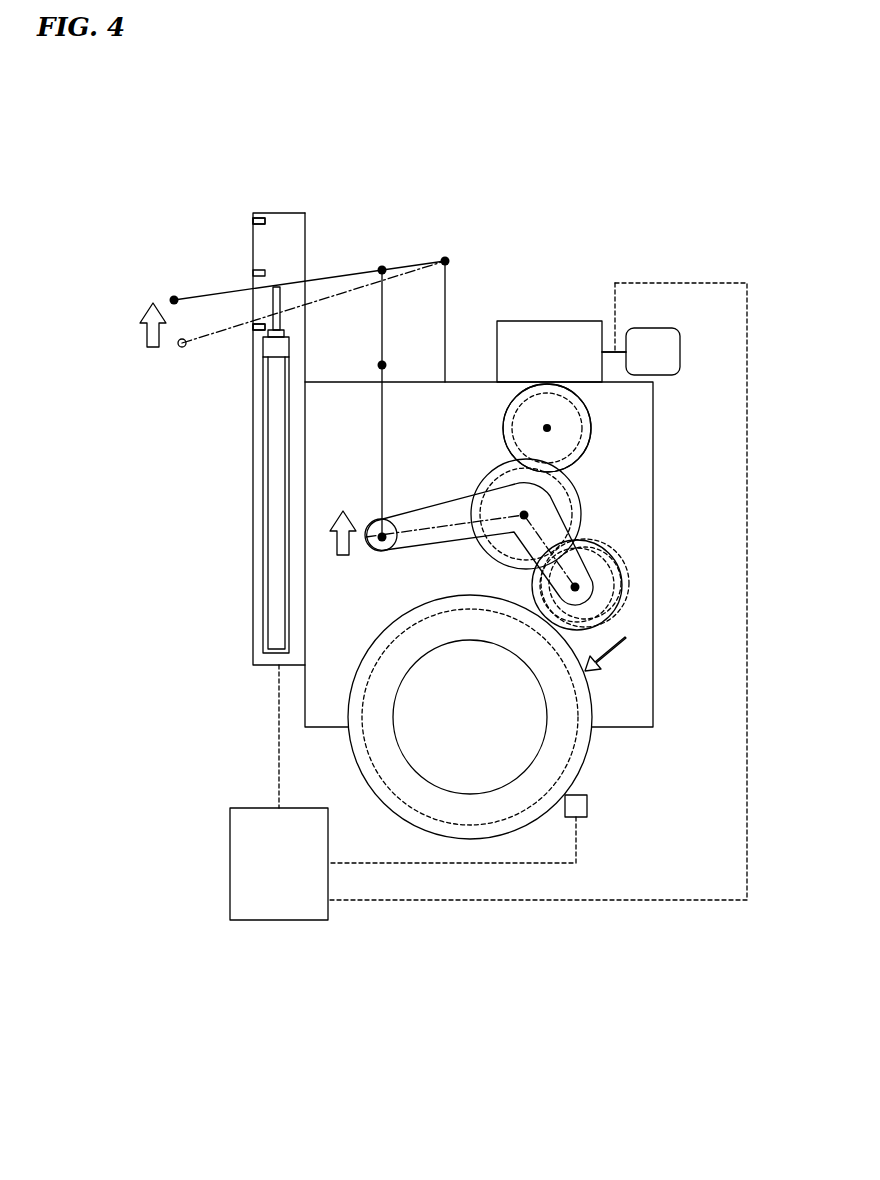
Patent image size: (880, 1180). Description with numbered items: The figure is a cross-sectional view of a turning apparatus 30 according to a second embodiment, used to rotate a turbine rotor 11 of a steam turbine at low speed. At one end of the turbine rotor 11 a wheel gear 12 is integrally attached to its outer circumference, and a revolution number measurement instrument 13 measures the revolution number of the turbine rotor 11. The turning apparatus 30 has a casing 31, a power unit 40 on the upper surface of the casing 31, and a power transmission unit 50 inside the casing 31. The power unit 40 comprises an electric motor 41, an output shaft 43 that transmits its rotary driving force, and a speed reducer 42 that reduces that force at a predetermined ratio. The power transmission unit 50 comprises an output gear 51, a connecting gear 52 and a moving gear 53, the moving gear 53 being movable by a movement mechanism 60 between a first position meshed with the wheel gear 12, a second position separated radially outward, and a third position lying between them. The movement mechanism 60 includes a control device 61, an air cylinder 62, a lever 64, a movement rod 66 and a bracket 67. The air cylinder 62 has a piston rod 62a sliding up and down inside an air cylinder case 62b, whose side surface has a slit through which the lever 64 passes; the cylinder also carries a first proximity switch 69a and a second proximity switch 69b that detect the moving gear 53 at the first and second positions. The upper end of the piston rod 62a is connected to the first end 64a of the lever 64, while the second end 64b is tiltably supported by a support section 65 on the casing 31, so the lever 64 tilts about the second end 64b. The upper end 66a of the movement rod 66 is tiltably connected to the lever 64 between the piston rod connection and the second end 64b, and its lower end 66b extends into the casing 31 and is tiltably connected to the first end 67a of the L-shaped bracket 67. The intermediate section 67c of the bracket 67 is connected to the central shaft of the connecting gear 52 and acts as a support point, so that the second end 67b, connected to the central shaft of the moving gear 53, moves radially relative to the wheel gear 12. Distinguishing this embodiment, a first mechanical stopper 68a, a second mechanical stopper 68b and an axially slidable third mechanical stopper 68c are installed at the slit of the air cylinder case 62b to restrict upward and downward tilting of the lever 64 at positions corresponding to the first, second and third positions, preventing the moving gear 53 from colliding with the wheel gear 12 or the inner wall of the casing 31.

The turning apparatus 30 is at (704, 118).
The casing 31 is at (653, 575).
The power unit 40 is at (533, 241).
The electric motor 41 is at (681, 350).
The speed reducer 42 is at (545, 336).
The output shaft 43 is at (615, 350).
The power transmission unit 50 is at (606, 436).
The output gear 51 is at (520, 420).
The connecting gear 52 is at (490, 478).
The moving gear 53 is at (612, 545).
The movement mechanism 60 is at (125, 284).
The control device 61 is at (282, 912).
The air cylinder 62 is at (265, 580).
The piston rod 62a is at (262, 340).
The air cylinder case 62b is at (253, 480).
The lever 64 is at (335, 276).
The first end 64a is at (173, 293).
The second end 64b is at (445, 256).
The support section 65 is at (446, 292).
The movement rod 66 is at (383, 341).
The upper end 66a is at (378, 276).
The lower end 66b is at (377, 530).
The bracket 67 is at (430, 540).
The first end 67a is at (385, 558).
The second end 67b is at (590, 606).
The intermediate section 67c is at (530, 513).
The first mechanical stopper 68a is at (252, 220).
The second mechanical stopper 68b is at (252, 328).
The third mechanical stopper 68c is at (252, 273).
The first proximity switch 69a is at (259, 221).
The second proximity switch 69b is at (259, 327).
The turbine rotor 11 is at (520, 753).
The wheel gear 12 is at (556, 737).
The revolution number measurement instrument 13 is at (580, 806).